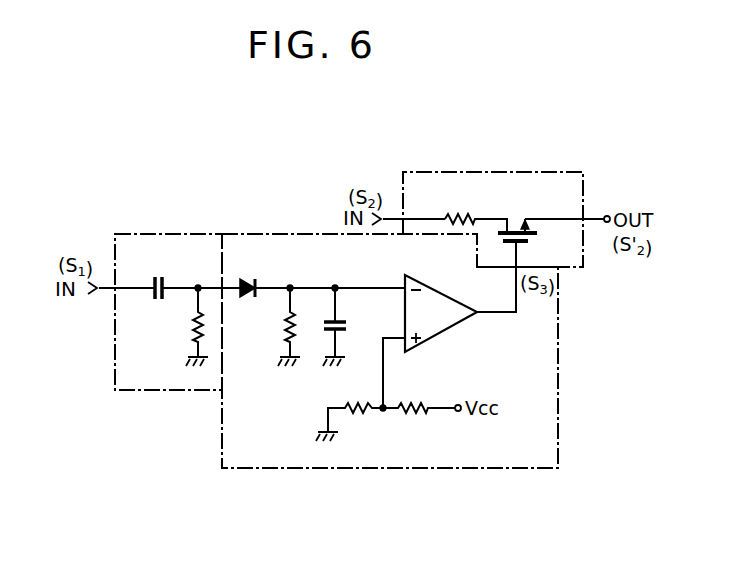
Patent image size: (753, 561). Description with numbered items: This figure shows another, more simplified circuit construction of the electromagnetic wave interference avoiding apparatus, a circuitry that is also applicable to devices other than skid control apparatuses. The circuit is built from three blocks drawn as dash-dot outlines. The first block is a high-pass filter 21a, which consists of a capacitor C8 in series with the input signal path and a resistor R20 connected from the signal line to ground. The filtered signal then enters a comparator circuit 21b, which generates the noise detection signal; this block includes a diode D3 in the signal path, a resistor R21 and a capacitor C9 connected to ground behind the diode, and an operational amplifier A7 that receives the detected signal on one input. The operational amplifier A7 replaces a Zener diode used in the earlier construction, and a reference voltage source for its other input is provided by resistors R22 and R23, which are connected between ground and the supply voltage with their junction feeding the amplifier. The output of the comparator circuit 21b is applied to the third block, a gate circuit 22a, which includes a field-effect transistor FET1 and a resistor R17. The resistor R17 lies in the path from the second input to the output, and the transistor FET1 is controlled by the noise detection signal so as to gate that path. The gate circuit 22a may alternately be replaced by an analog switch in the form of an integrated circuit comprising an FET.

The high-pass filter 21a is at (156, 233).
The comparator circuit 21b is at (274, 233).
The gate circuit 22a is at (496, 171).
The capacitor C8 is at (158, 272).
The resistor R20 is at (181, 327).
The diode D3 is at (247, 275).
The resistor R21 is at (274, 327).
The capacitor C9 is at (343, 327).
The operational amplifier A7 is at (441, 313).
The resistor R22 is at (349, 410).
The resistor R23 is at (422, 396).
The resistor R17 is at (475, 211).
The field-effect transistor FET1 is at (538, 239).